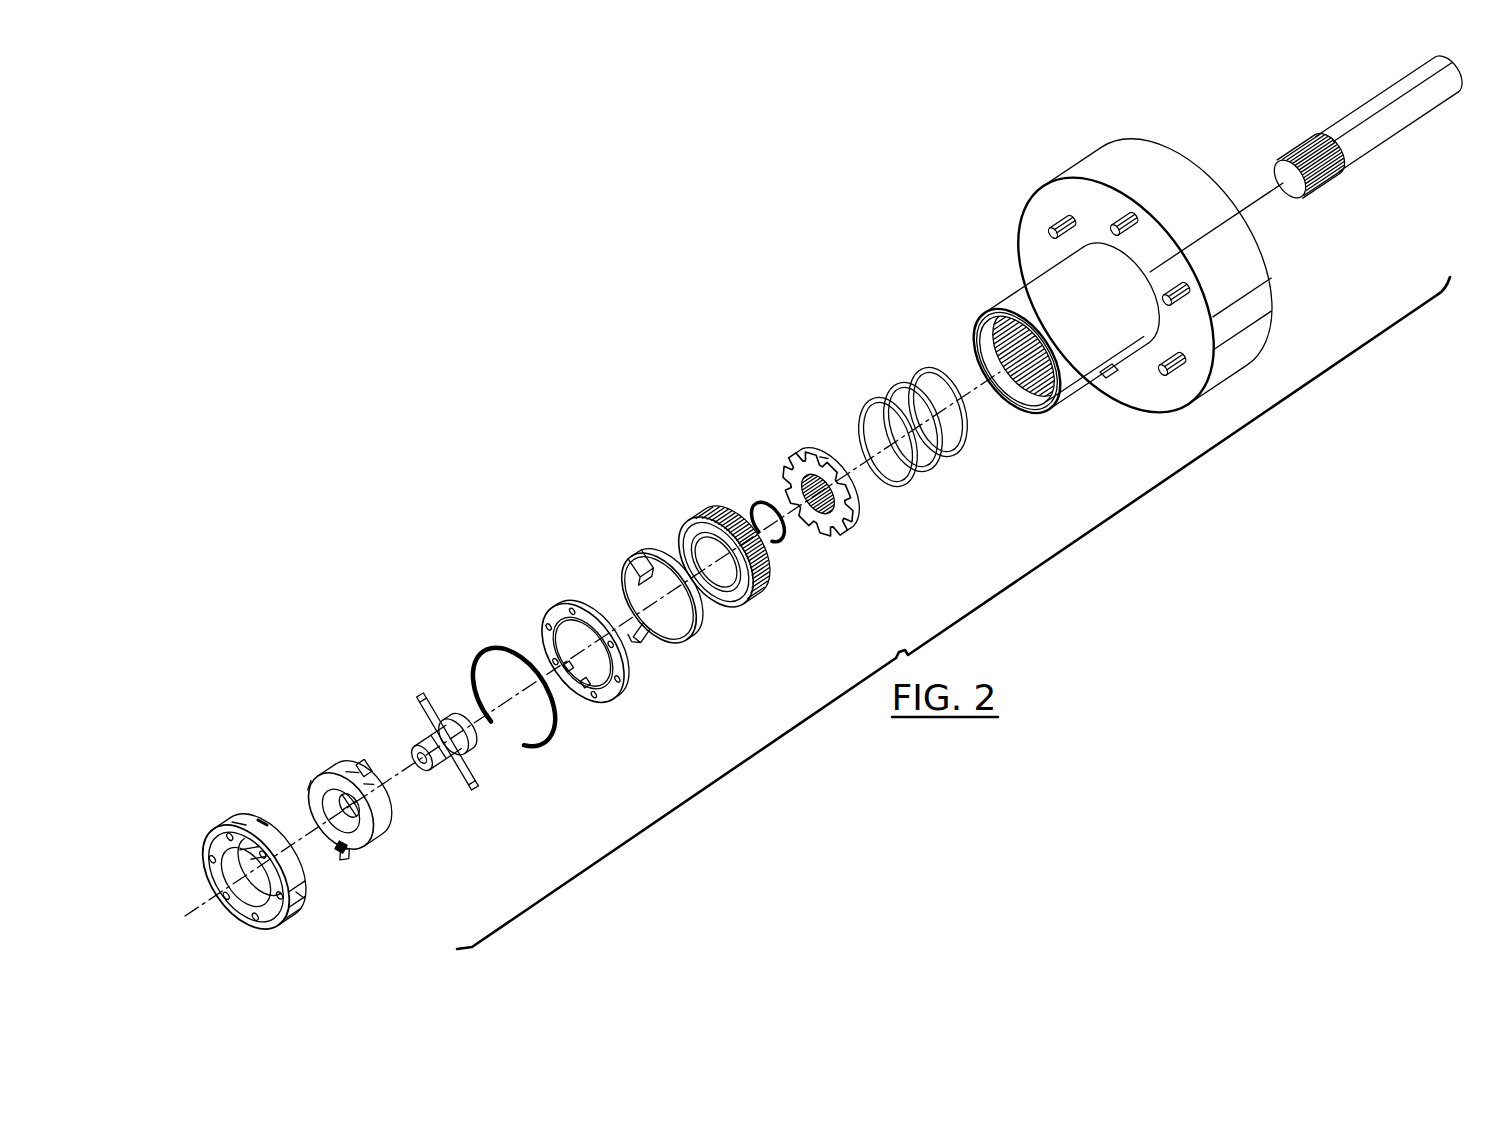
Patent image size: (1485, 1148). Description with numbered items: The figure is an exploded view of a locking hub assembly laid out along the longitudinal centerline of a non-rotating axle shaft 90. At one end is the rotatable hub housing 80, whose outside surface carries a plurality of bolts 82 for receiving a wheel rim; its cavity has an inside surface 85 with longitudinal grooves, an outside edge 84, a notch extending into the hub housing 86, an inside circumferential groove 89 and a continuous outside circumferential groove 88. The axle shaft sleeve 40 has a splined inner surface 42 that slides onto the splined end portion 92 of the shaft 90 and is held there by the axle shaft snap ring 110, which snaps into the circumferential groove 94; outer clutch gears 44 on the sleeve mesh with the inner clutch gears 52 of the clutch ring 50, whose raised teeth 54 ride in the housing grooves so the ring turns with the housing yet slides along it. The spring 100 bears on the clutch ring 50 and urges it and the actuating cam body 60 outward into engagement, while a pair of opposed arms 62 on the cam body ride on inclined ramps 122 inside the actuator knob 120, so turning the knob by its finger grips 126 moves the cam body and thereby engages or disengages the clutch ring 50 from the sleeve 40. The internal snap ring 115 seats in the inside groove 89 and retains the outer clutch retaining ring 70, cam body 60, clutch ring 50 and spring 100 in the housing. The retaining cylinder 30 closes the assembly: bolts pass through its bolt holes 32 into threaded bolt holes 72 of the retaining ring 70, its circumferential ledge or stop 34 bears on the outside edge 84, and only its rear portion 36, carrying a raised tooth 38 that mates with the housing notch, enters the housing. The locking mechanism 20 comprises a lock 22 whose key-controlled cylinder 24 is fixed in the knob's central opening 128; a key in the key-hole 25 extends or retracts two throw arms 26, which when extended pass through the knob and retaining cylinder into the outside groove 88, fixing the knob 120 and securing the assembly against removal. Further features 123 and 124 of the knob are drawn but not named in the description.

The locking mechanism 20 is at (513, 863).
The lock 22 is at (466, 755).
The key-controlled cylinder 24 is at (440, 766).
The key-hole 25 is at (419, 752).
The throw arms 26 is at (432, 700).
The retaining cylinder 30 is at (284, 871).
The bolt holes 32 is at (228, 918).
The circumferential ledge or stop 34 is at (245, 822).
The rear portion 36 is at (300, 896).
The raised tooth 38 is at (262, 820).
The axle shaft sleeve 40 is at (840, 495).
The splined inner surface 42 is at (812, 516).
The outer clutch gears 44 is at (795, 465).
The clutch ring 50 is at (740, 567).
The inner clutch gears 52 is at (716, 598).
The raised teeth 54 is at (695, 518).
The actuating cam body 60 is at (643, 587).
The opposed arms 62 is at (661, 646).
The outer clutch retaining ring 70 is at (604, 657).
The threaded bolt holes 72 is at (605, 688).
The hub housing 80 is at (1128, 287).
The bolts 82 is at (1170, 368).
The outside edge 84 is at (1040, 414).
The inside surface 85 is at (1016, 388).
The hub housing interior 86 is at (1018, 326).
The outside circumferential groove 88 is at (978, 352).
The inside circumferential groove 89 is at (988, 340).
The axle shaft 90 is at (1360, 110).
The splined end portion 92 is at (1344, 163).
The circumferential groove 94 is at (1300, 196).
The spring 100 is at (913, 400).
The axle shaft snap ring 110 is at (745, 494).
The internal snap ring 115 is at (487, 678).
The actuator knob 120 is at (329, 799).
The inclined ramp 122 is at (362, 764).
The cam ring slot 123 is at (372, 768).
The cam ring surface 124 is at (338, 762).
The finger grips 126 is at (358, 845).
The central opening 128 is at (311, 812).